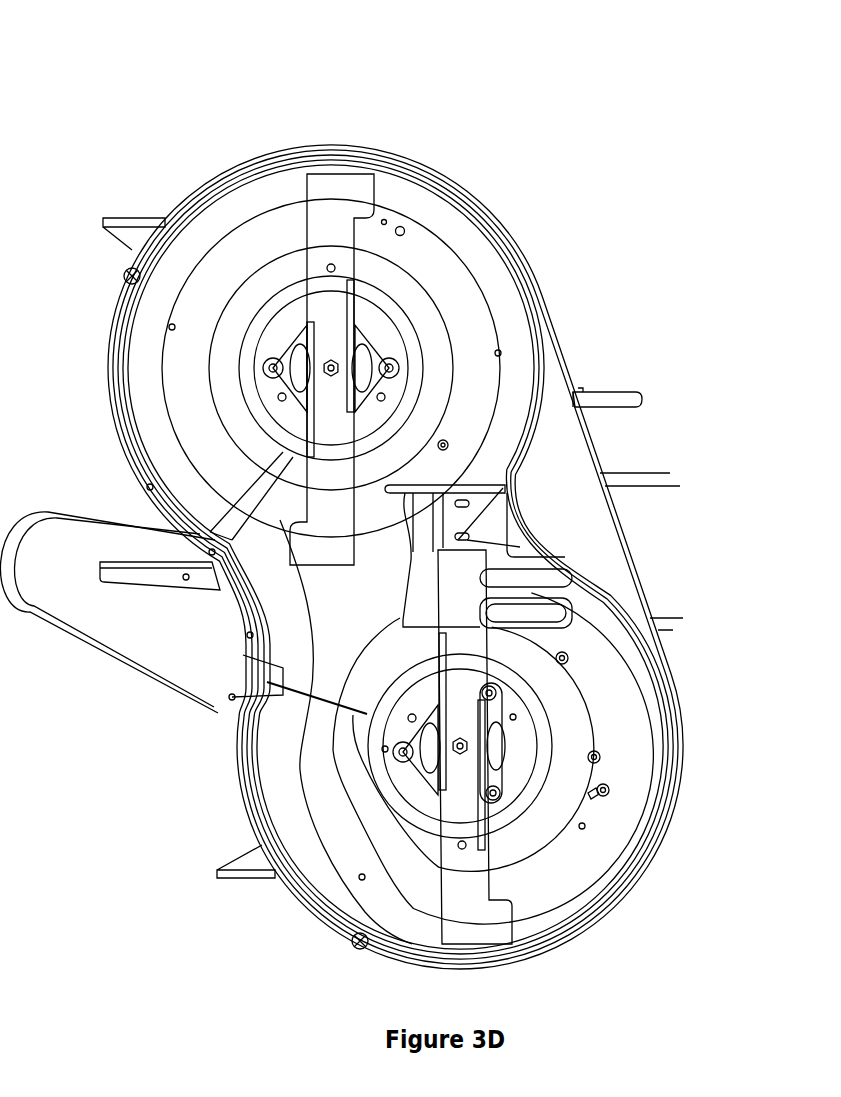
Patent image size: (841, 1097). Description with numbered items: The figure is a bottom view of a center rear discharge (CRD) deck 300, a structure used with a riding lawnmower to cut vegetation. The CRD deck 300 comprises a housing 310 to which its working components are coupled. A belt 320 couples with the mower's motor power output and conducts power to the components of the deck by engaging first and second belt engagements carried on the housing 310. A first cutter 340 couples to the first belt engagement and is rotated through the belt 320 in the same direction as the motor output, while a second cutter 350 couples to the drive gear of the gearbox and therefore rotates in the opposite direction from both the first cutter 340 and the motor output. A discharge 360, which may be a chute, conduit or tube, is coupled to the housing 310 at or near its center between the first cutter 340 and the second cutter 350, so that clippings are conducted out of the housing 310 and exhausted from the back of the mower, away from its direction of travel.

The CRD deck 300 is at (62, 35).
The housing 310 is at (247, 159).
The belt 320 is at (107, 512).
The first cutter 340 is at (337, 290).
The second cutter 350 is at (470, 790).
The discharge 360 is at (640, 468).